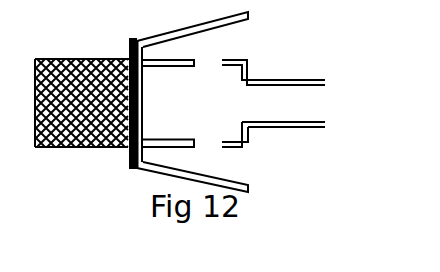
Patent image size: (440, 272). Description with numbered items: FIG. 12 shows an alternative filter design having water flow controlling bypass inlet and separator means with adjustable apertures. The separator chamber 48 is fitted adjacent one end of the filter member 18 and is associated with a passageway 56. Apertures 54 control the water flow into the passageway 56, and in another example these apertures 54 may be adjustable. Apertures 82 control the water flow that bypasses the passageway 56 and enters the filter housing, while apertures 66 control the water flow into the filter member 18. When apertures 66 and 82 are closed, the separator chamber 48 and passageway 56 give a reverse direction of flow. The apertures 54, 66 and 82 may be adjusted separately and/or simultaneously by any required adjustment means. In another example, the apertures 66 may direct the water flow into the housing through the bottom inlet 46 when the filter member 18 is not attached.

The filter member 18 is at (52, 147).
The apertures 82 is at (128, 53).
The passageway 56 is at (232, 40).
The apertures 66 is at (146, 67).
The separator chamber 48 is at (147, 93).
The bottom inlet 46 is at (315, 99).
The apertures 54 is at (208, 60).